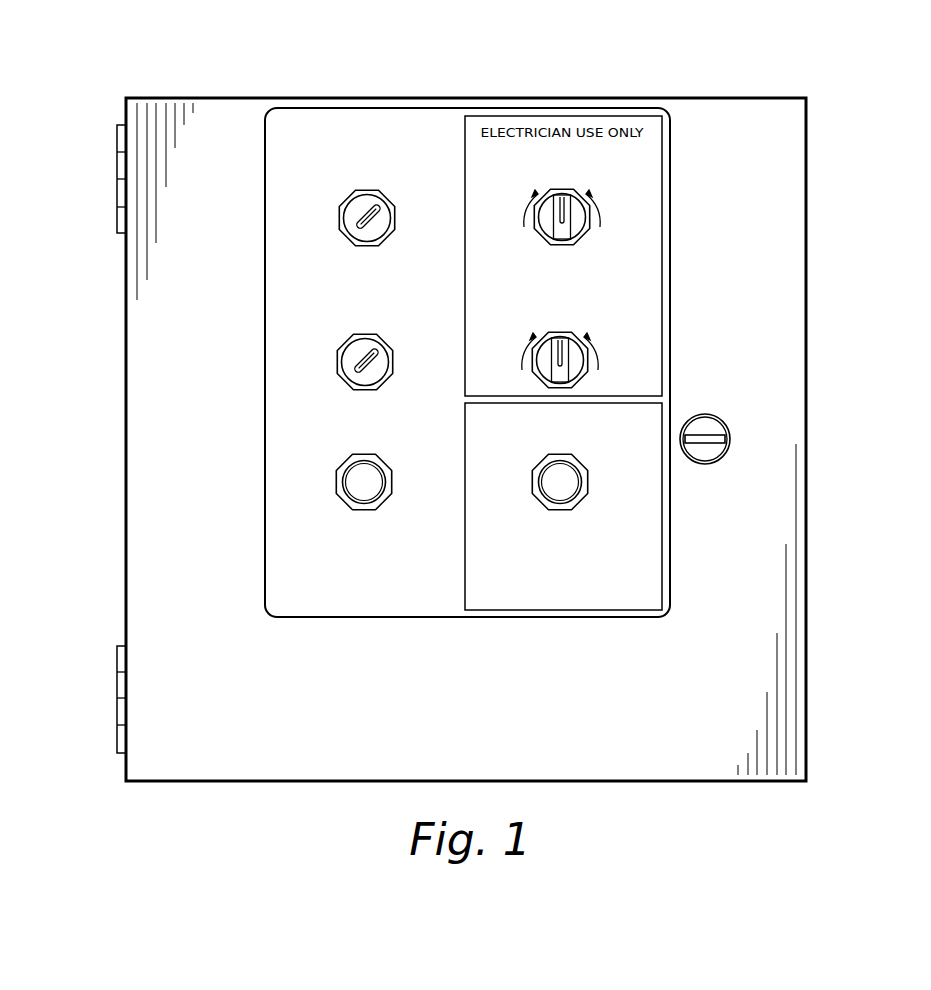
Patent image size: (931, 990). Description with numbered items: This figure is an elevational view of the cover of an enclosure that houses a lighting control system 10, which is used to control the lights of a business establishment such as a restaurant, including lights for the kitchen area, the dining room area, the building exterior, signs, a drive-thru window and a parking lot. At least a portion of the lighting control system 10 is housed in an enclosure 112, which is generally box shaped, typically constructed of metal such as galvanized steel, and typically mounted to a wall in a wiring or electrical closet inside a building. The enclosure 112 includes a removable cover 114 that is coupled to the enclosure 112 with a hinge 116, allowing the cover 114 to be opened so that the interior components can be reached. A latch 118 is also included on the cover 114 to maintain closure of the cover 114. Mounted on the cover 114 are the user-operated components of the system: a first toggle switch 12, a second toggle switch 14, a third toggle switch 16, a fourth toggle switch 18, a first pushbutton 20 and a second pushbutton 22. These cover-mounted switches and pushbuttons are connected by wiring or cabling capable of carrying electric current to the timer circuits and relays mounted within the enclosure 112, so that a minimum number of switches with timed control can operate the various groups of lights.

The lighting control system 10 is at (378, 66).
The first toggle switch 12 is at (344, 224).
The second toggle switch 14 is at (342, 377).
The third toggle switch 16 is at (577, 233).
The fourth toggle switch 18 is at (537, 368).
The first pushbutton 20 is at (383, 508).
The second pushbutton 22 is at (539, 509).
The enclosure 112 is at (692, 84).
The removable cover 114 is at (267, 763).
The hinge 116 is at (116, 183).
The latch 118 is at (720, 428).